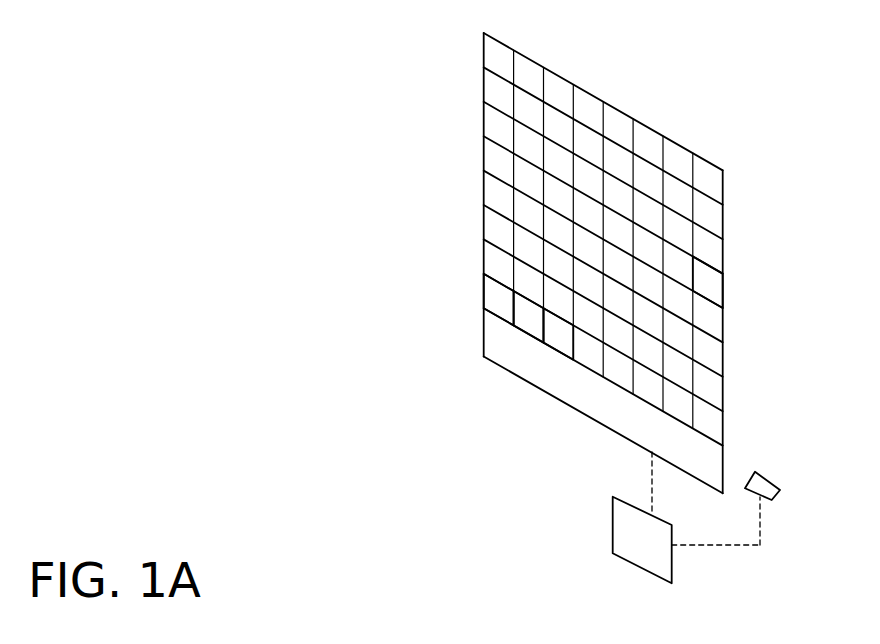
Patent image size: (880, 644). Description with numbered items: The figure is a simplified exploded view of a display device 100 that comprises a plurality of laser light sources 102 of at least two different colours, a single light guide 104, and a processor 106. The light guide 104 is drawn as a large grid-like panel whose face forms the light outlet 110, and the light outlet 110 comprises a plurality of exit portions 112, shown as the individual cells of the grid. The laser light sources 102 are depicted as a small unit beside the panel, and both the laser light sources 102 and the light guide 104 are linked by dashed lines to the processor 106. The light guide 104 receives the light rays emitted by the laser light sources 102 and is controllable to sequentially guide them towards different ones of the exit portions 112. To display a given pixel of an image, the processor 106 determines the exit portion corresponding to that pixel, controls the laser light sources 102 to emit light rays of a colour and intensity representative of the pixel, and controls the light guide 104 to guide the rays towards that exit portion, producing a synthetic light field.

The display device 100 is at (213, 72).
The laser light sources 102 is at (793, 521).
The light guide 104 is at (604, 263).
The processor 106 is at (667, 554).
The light outlet 110 is at (749, 271).
The exit portions 112 is at (529, 375).